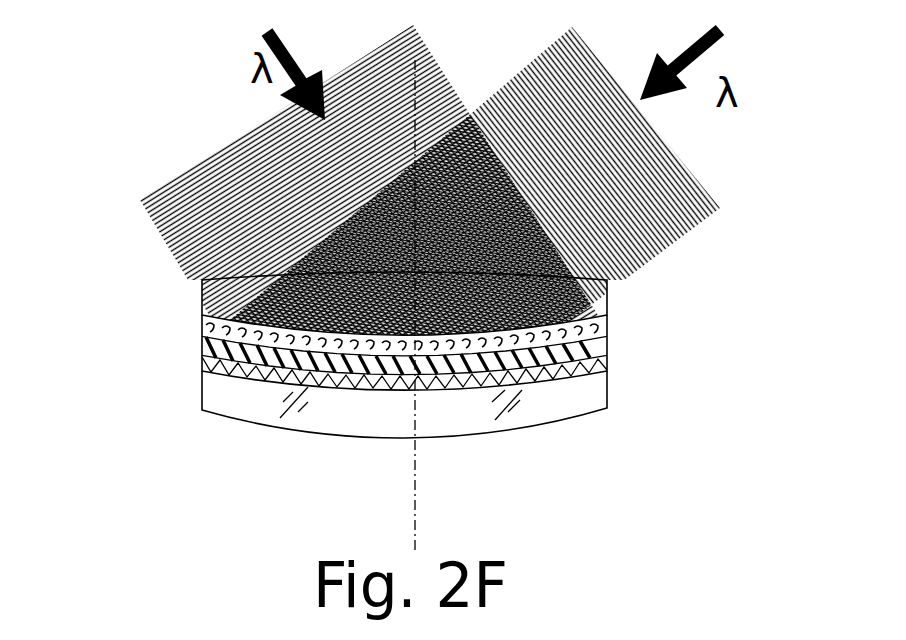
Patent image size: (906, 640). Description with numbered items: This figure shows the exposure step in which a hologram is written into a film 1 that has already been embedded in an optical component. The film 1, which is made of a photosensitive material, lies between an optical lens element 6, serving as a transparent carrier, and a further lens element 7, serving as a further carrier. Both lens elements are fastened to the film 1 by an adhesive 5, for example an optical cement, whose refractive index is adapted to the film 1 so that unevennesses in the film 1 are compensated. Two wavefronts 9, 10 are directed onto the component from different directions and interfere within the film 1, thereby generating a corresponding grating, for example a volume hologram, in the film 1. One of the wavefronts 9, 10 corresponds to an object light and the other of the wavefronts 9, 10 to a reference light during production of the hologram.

The film 1 is at (401, 363).
The adhesive 5 is at (585, 362).
The optical lens element 6 is at (560, 297).
The further lens element 7 is at (340, 412).
The wavefront 9 is at (182, 214).
The wavefront 10 is at (668, 198).